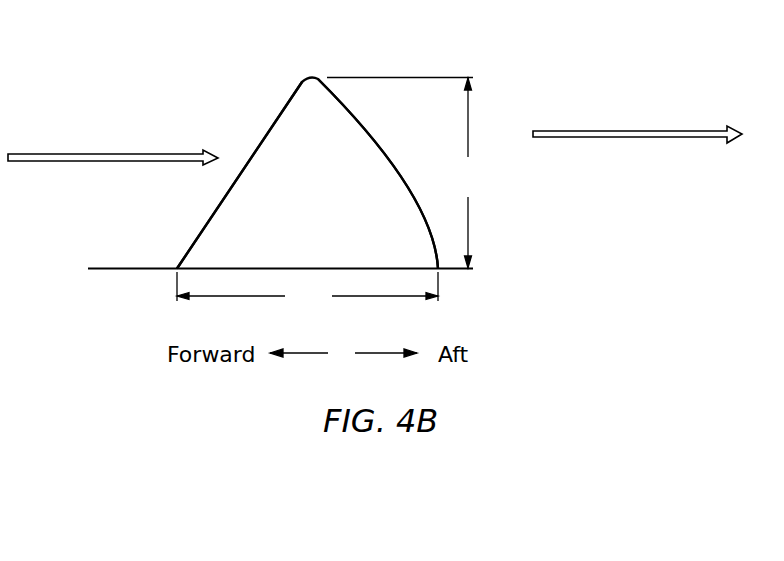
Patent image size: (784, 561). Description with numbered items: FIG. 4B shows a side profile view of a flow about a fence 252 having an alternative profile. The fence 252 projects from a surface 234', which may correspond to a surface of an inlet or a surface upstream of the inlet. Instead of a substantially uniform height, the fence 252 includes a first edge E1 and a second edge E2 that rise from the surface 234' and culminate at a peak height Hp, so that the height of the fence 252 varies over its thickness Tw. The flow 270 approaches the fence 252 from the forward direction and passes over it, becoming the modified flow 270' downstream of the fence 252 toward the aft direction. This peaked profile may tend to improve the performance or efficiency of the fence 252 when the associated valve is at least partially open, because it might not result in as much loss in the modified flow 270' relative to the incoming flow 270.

The fence 252 is at (313, 77).
The flow 270 is at (113, 122).
The modified flow 270' is at (637, 92).
The surface 234' is at (278, 308).
The edge E1 is at (264, 132).
The edge E2 is at (365, 118).
The peak height Hp is at (405, 173).
The thickness Tw is at (307, 291).